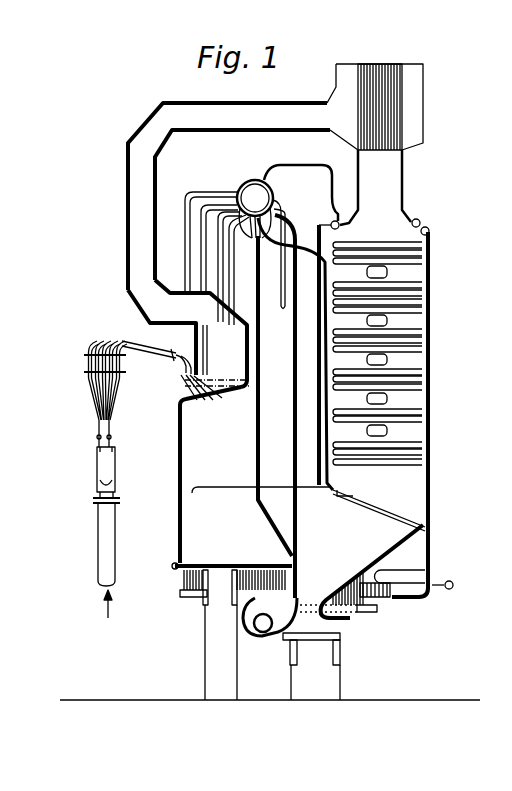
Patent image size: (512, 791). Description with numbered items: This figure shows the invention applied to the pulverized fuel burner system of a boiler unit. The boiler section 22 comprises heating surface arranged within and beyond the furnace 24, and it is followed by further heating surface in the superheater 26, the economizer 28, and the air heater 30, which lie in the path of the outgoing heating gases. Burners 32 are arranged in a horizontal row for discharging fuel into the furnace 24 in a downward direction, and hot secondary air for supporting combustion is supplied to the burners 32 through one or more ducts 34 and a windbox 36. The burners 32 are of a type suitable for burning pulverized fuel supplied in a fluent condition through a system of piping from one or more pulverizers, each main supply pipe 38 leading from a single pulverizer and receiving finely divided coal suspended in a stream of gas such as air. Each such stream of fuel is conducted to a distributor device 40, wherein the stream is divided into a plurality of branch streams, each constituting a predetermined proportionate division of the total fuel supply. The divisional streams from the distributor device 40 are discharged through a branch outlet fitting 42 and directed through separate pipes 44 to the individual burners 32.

The boiler section 22 is at (288, 480).
The furnace 24 is at (232, 475).
The superheater 26 is at (405, 383).
The economizer 28 is at (380, 250).
The air heater 30 is at (405, 137).
The burners 32 is at (179, 390).
The ducts 34 is at (128, 203).
The windbox 36 is at (176, 374).
The main supply pipe 38 is at (100, 547).
The distributor device 40 is at (95, 504).
The branch outlet fitting 42 is at (95, 474).
The separate pipes 44 is at (112, 395).